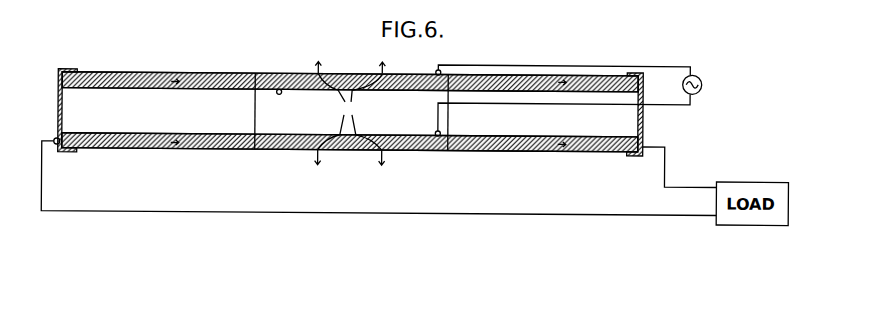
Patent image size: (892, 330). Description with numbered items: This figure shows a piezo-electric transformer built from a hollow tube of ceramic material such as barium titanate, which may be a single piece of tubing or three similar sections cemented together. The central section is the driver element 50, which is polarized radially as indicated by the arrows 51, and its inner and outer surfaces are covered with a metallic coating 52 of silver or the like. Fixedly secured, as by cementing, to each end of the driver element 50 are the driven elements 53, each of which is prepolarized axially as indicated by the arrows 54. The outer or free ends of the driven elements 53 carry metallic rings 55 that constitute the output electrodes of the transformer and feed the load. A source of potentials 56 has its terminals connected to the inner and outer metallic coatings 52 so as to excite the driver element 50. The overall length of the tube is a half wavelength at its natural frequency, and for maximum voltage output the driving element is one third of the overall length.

The driver element 50 is at (413, 71).
The arrows 51 is at (350, 114).
The metallic coating 52 is at (280, 88).
The driven elements 53 is at (99, 72).
The arrows 54 is at (152, 84).
The metallic rings 55 is at (58, 107).
The source of potentials 56 is at (702, 80).